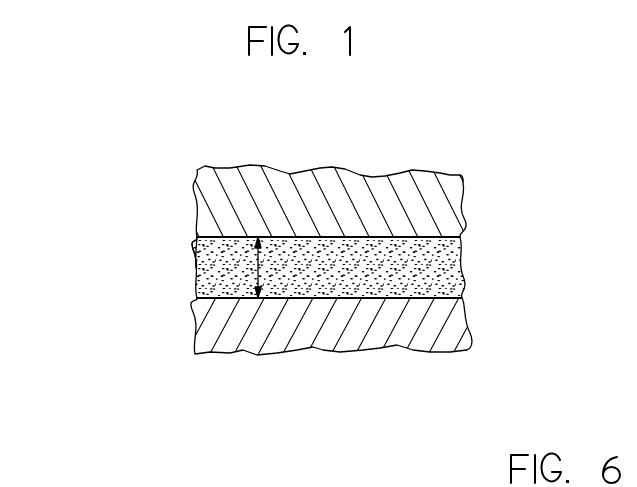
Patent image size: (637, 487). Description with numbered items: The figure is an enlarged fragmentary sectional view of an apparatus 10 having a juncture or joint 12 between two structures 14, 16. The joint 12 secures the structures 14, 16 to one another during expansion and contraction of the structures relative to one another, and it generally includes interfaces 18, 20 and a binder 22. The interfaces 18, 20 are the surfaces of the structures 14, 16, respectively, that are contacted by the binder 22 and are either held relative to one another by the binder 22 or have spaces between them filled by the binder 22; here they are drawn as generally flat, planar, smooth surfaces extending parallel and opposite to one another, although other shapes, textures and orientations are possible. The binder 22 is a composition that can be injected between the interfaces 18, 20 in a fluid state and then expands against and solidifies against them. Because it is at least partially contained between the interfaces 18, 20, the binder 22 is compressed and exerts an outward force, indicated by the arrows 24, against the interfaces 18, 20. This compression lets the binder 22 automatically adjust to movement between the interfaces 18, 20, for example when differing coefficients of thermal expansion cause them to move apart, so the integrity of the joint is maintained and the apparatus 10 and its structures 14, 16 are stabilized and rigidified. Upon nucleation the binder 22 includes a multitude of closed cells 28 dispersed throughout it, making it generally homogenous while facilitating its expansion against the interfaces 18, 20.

The apparatus 10 is at (488, 119).
The joint 12 is at (158, 253).
The structure 14 is at (282, 183).
The structure 16 is at (325, 343).
The interface 18 is at (463, 253).
The interface 20 is at (463, 287).
The binder 22 is at (462, 268).
The arrows 24 is at (258, 264).
The closed cells 28 is at (212, 248).